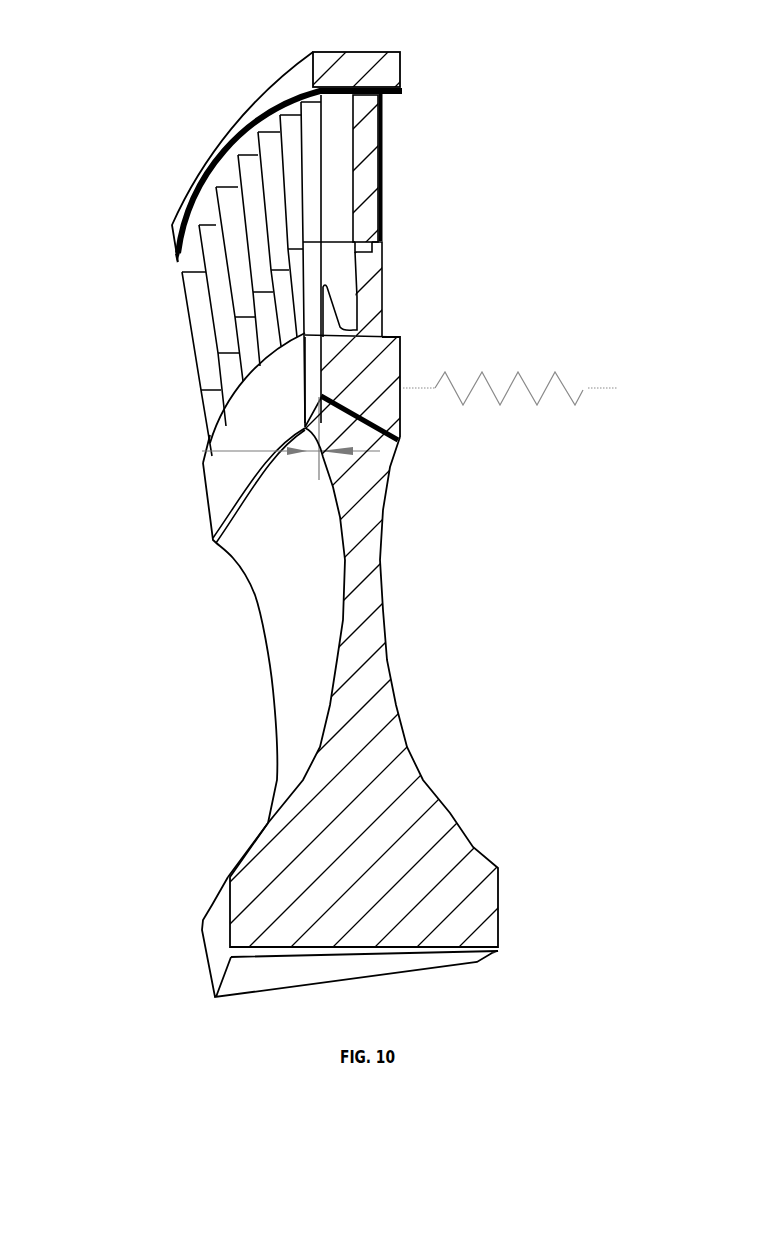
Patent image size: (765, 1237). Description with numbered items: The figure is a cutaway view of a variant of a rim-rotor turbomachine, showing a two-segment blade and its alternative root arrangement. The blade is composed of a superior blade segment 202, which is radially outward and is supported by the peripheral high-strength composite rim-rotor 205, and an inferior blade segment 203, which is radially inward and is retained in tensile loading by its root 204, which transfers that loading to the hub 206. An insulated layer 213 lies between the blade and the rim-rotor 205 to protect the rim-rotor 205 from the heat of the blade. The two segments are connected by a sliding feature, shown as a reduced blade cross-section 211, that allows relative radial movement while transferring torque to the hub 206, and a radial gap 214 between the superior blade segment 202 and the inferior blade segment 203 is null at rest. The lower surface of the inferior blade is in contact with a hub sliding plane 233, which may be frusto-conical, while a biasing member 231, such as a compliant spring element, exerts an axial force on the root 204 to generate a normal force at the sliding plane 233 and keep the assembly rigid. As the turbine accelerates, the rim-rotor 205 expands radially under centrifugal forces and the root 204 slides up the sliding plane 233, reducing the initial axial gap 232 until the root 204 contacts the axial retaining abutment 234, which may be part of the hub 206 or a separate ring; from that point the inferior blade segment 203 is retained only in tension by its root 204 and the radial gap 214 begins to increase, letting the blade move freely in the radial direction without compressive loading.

The superior blade segment 202 is at (365, 167).
The inferior blade segment 203 is at (372, 312).
The root 204 is at (424, 354).
The rim-rotor 205 is at (357, 72).
The hub 206 is at (360, 617).
The reduced blade cross-section 211 is at (381, 224).
The insulated layer 213 is at (430, 91).
The gap 214 is at (413, 240).
The biasing member 231 is at (520, 413).
The initial axial gap 232 is at (255, 438).
The hub sliding plane 233 is at (401, 446).
The axial retaining abutment 234 is at (273, 393).